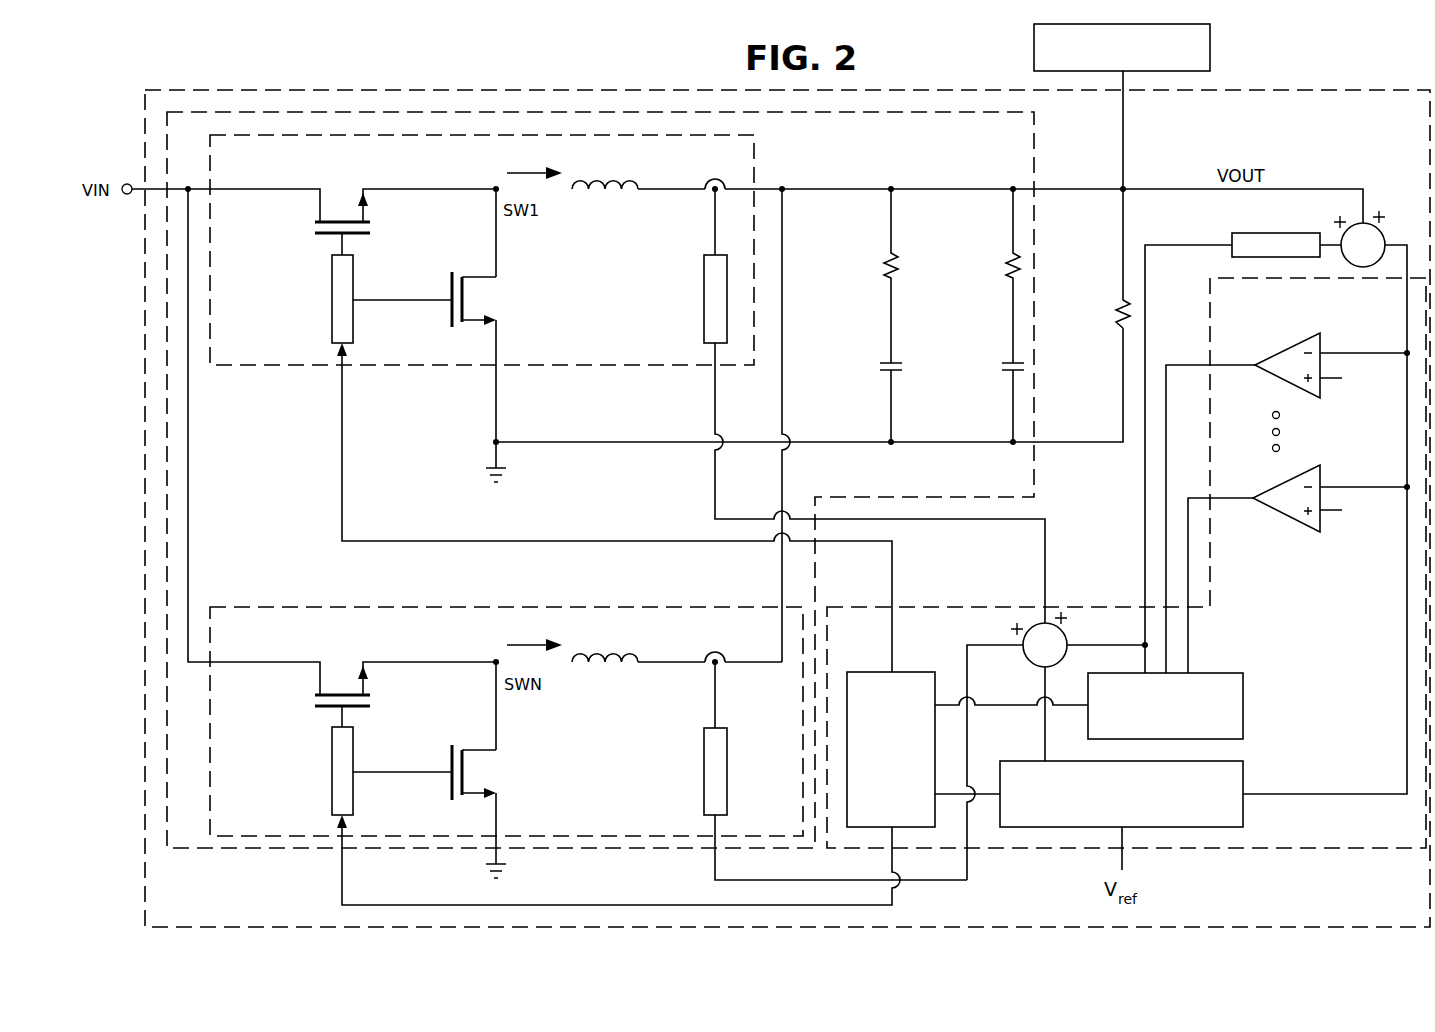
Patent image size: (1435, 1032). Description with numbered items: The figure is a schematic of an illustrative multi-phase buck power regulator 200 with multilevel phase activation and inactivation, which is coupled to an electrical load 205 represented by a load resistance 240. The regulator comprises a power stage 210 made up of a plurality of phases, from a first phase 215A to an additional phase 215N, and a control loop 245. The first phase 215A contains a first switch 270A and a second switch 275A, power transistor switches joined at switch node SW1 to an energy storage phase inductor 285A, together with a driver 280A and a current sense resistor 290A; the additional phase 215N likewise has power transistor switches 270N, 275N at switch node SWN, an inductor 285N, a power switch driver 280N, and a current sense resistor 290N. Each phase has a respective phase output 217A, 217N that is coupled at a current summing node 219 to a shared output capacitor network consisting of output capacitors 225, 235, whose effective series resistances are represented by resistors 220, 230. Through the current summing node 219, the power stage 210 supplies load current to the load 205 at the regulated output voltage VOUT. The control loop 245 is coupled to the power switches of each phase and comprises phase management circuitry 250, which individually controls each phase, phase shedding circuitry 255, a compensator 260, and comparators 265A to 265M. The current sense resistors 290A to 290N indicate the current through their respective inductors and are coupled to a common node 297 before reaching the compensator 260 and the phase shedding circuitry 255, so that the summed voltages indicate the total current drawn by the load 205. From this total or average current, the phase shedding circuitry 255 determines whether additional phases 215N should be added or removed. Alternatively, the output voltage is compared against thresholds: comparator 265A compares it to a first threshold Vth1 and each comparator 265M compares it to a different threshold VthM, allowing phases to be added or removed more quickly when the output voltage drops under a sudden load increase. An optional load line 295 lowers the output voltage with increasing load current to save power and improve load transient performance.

The multi-phase buck power regulator 200 is at (376, 86).
The load 205 is at (1212, 52).
The power stage 210 is at (1045, 140).
The first phase 215A is at (766, 168).
The additional phase 215N is at (293, 600).
The phase output 217A is at (673, 191).
The phase output 217N is at (672, 664).
The current summing node 219 is at (769, 193).
The resistor 220 is at (885, 267).
The output capacitor 225 is at (880, 365).
The resistor 230 is at (1007, 262).
The output capacitor 235 is at (1002, 365).
The load resistance 240 is at (1118, 311).
The control loop 245 is at (1302, 854).
The phase management circuitry 250 is at (891, 749).
The phase shedding circuitry 255 is at (1165, 706).
The compensator 260 is at (1121, 794).
The comparator 265A is at (1288, 347).
The comparator 265M is at (1287, 523).
The first switch 270A is at (312, 241).
The power transistor switch 270N is at (312, 714).
The second switch 275A is at (452, 285).
The power transistor switch 275N is at (452, 782).
The driver 280A is at (332, 290).
The power switch driver 280N is at (332, 786).
The phase inductor 285A is at (634, 171).
The inductor 285N is at (634, 644).
The current sense resistor 290A is at (704, 298).
The current sense resistor 290N is at (704, 773).
The load line 295 is at (1230, 241).
The common node 297 is at (1032, 626).